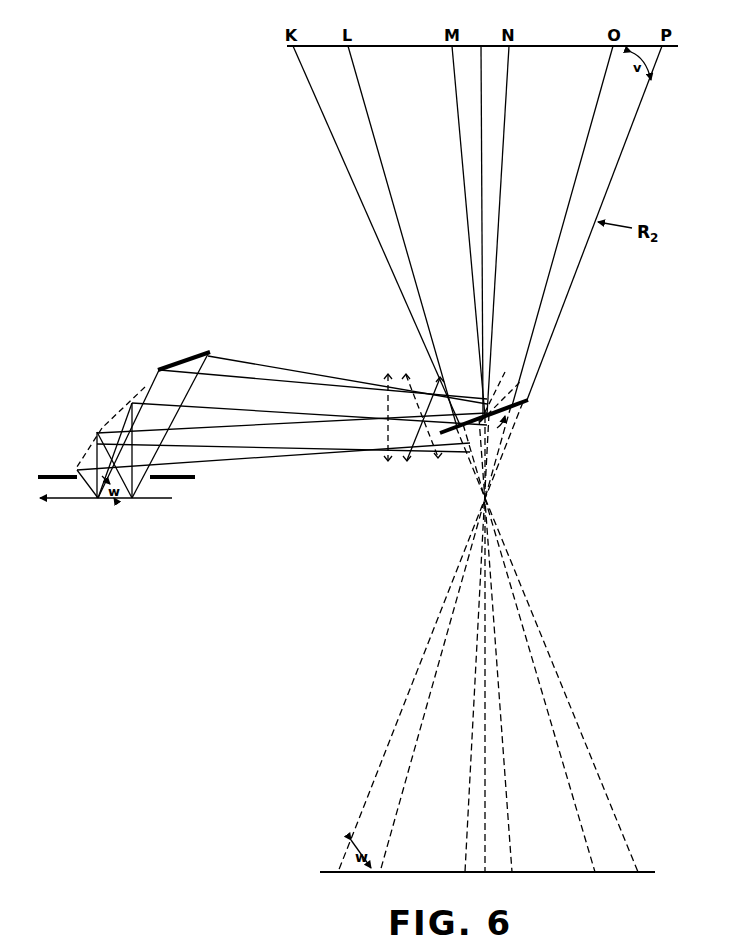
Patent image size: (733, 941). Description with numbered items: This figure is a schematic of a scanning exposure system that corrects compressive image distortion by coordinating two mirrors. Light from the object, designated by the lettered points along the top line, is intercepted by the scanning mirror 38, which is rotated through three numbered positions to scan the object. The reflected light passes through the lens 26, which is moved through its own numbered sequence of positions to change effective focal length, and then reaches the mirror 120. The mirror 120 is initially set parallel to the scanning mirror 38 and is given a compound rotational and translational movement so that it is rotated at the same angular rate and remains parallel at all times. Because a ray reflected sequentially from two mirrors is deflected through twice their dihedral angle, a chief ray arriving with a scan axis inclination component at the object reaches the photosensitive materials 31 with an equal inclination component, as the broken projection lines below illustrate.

The mirror 120 is at (178, 366).
The lens 26 is at (435, 376).
The scanning mirror 38 is at (529, 406).
The photosensitive materials 31 is at (172, 499).